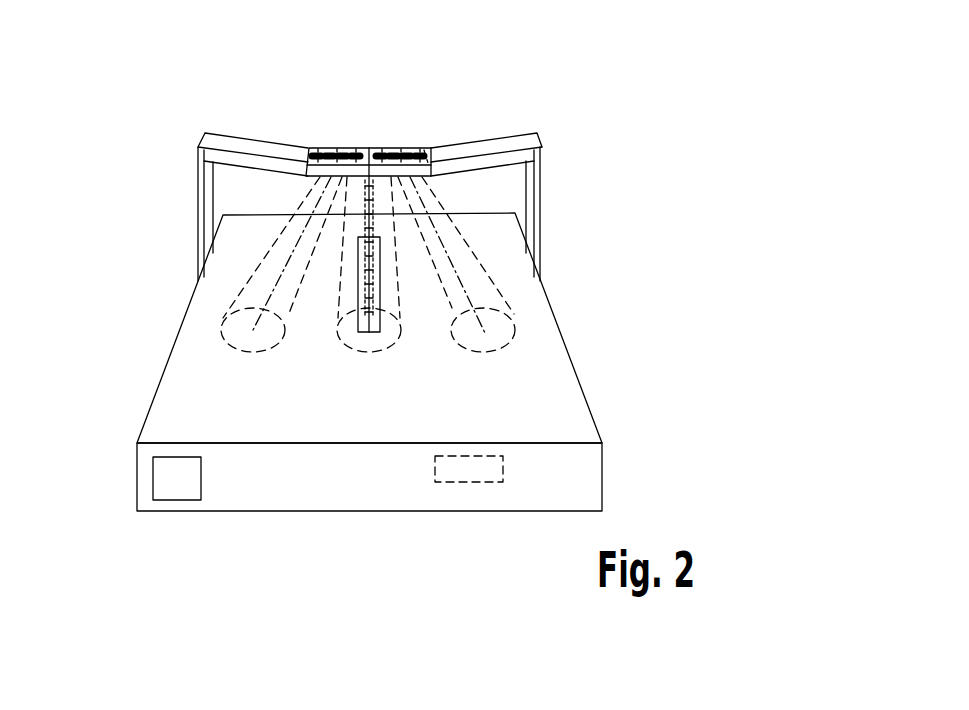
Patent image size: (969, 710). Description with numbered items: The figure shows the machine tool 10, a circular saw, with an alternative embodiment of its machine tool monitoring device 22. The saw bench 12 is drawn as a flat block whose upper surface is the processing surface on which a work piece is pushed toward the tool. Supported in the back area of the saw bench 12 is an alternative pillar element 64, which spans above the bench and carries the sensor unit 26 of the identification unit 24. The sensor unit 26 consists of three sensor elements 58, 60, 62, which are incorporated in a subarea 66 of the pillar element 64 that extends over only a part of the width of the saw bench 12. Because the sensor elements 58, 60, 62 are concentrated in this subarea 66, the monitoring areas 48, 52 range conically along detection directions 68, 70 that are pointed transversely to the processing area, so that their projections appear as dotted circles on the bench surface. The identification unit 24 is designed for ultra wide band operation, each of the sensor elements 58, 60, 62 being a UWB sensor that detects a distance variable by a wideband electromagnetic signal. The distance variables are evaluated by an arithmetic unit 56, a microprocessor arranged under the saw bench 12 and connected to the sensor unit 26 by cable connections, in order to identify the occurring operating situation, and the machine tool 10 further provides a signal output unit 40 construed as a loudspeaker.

The machine tool 10 is at (603, 112).
The saw bench 12 is at (570, 413).
The machine tool monitoring device 22 is at (203, 120).
The identification unit 24 is at (453, 125).
The sensor unit 26 is at (344, 135).
The signal output unit 40 is at (167, 480).
The monitoring area 48 is at (250, 278).
The monitoring area 52 is at (487, 280).
The arithmetic unit 56 is at (475, 470).
The sensor element 58 is at (323, 148).
The sensor element 60 is at (362, 148).
The sensor element 62 is at (407, 148).
The pillar element 64 is at (520, 142).
The subarea 66 is at (423, 153).
The detection direction 68 is at (293, 257).
The detection direction 70 is at (437, 235).